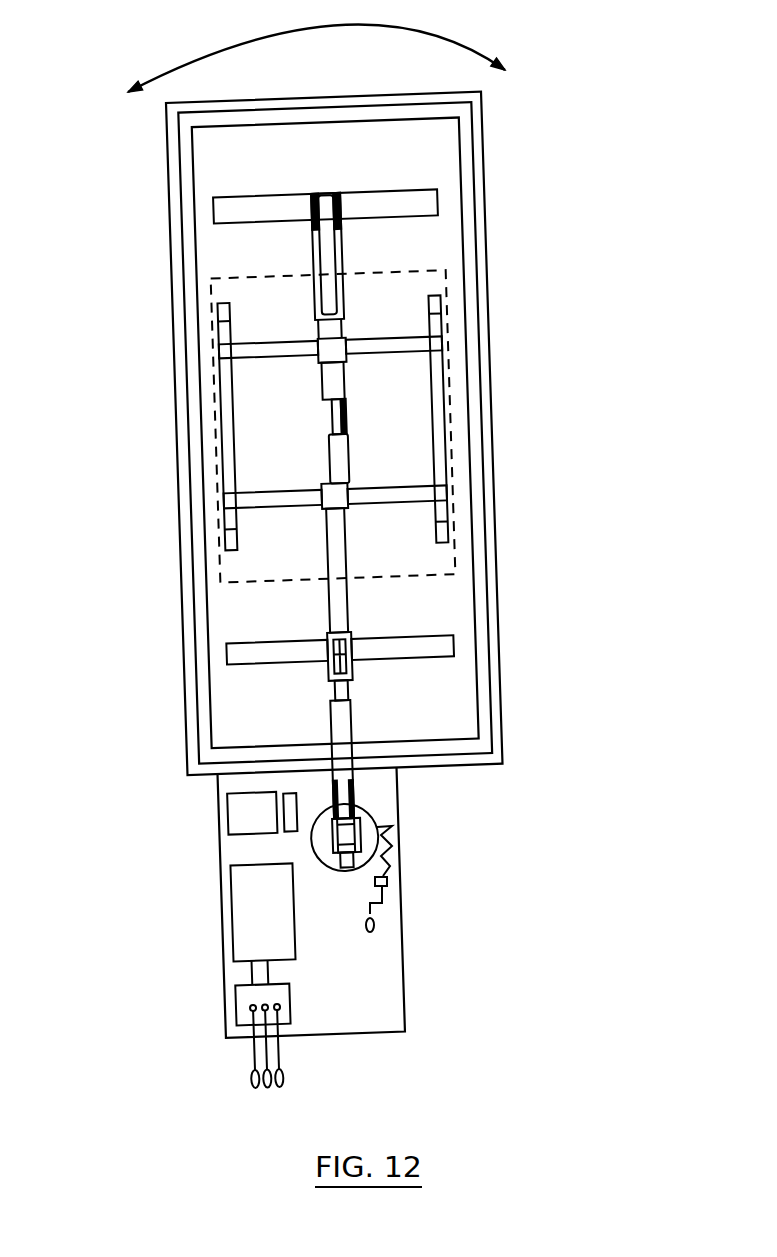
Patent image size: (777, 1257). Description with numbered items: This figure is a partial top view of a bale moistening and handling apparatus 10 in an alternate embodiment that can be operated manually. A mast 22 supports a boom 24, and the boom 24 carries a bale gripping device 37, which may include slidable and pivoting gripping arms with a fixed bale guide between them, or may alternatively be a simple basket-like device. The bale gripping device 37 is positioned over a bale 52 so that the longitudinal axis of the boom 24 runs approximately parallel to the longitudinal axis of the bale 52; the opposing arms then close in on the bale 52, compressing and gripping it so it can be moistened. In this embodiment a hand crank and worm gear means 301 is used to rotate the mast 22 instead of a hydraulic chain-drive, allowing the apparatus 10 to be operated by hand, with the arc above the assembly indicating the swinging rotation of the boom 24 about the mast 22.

The bale moistening and handling apparatus 10 is at (45, 1102).
The mast 22 is at (363, 830).
The boom 24 is at (335, 600).
The bale gripping device 37 is at (203, 390).
The bale 52 is at (238, 575).
The hand crank and worm gear means 301 is at (397, 842).